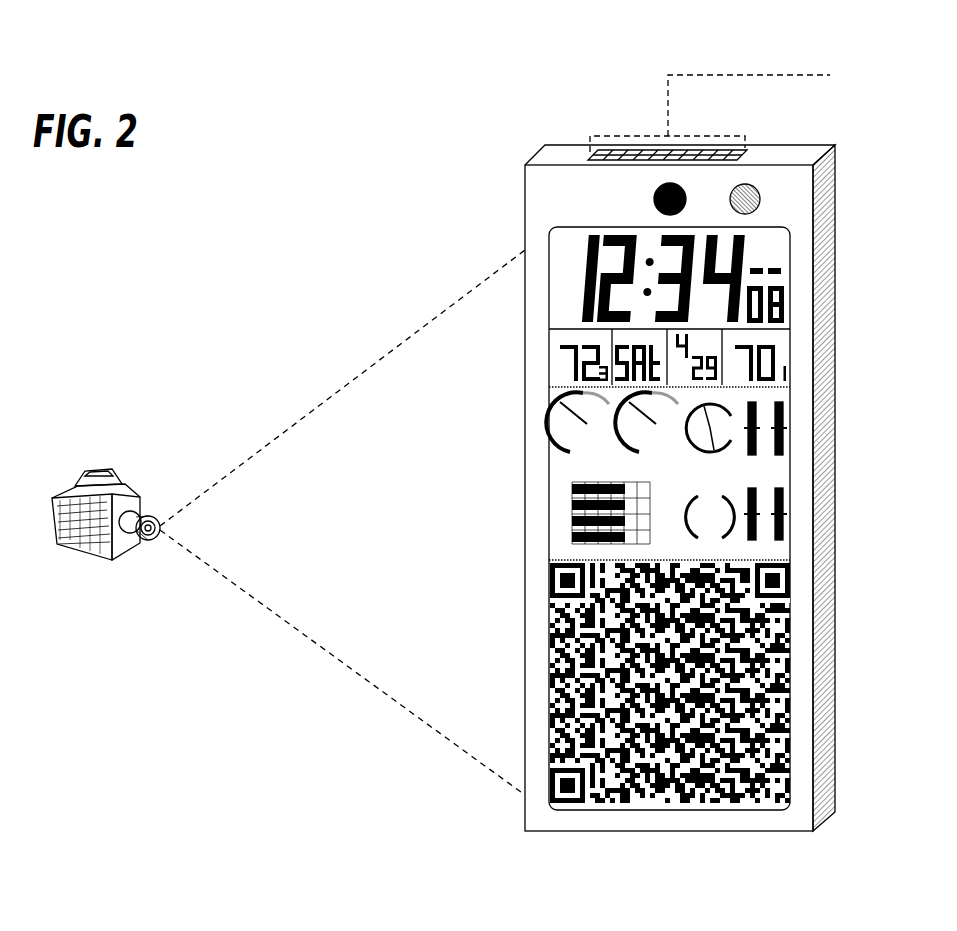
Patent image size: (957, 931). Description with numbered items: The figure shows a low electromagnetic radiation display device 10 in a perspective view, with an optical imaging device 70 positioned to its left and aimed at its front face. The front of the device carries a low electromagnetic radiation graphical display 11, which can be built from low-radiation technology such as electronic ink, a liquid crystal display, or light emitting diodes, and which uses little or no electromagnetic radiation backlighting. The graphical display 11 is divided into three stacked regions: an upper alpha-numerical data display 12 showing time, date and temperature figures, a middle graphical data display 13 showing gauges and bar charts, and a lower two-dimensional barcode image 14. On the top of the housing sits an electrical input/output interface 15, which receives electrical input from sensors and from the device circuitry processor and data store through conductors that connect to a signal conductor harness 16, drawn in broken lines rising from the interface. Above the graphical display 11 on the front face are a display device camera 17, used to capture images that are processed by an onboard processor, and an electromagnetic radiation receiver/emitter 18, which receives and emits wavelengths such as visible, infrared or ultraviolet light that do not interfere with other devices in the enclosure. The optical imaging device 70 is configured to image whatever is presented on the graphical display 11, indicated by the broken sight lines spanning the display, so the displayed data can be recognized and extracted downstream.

The low electromagnetic radiation display device 10 is at (550, 156).
The low electromagnetic radiation graphical display 11 is at (792, 813).
The alpha-numerical data display 12 is at (800, 227).
The graphical data display 13 is at (800, 381).
The 2-D barcode image 14 is at (800, 557).
The electrical input/output interface 15 is at (620, 154).
The signal conductor harness 16 is at (708, 72).
The display device camera 17 is at (655, 199).
The electromagnetic radiation receiver/emitter 18 is at (760, 194).
The optical imaging device 70 is at (112, 470).